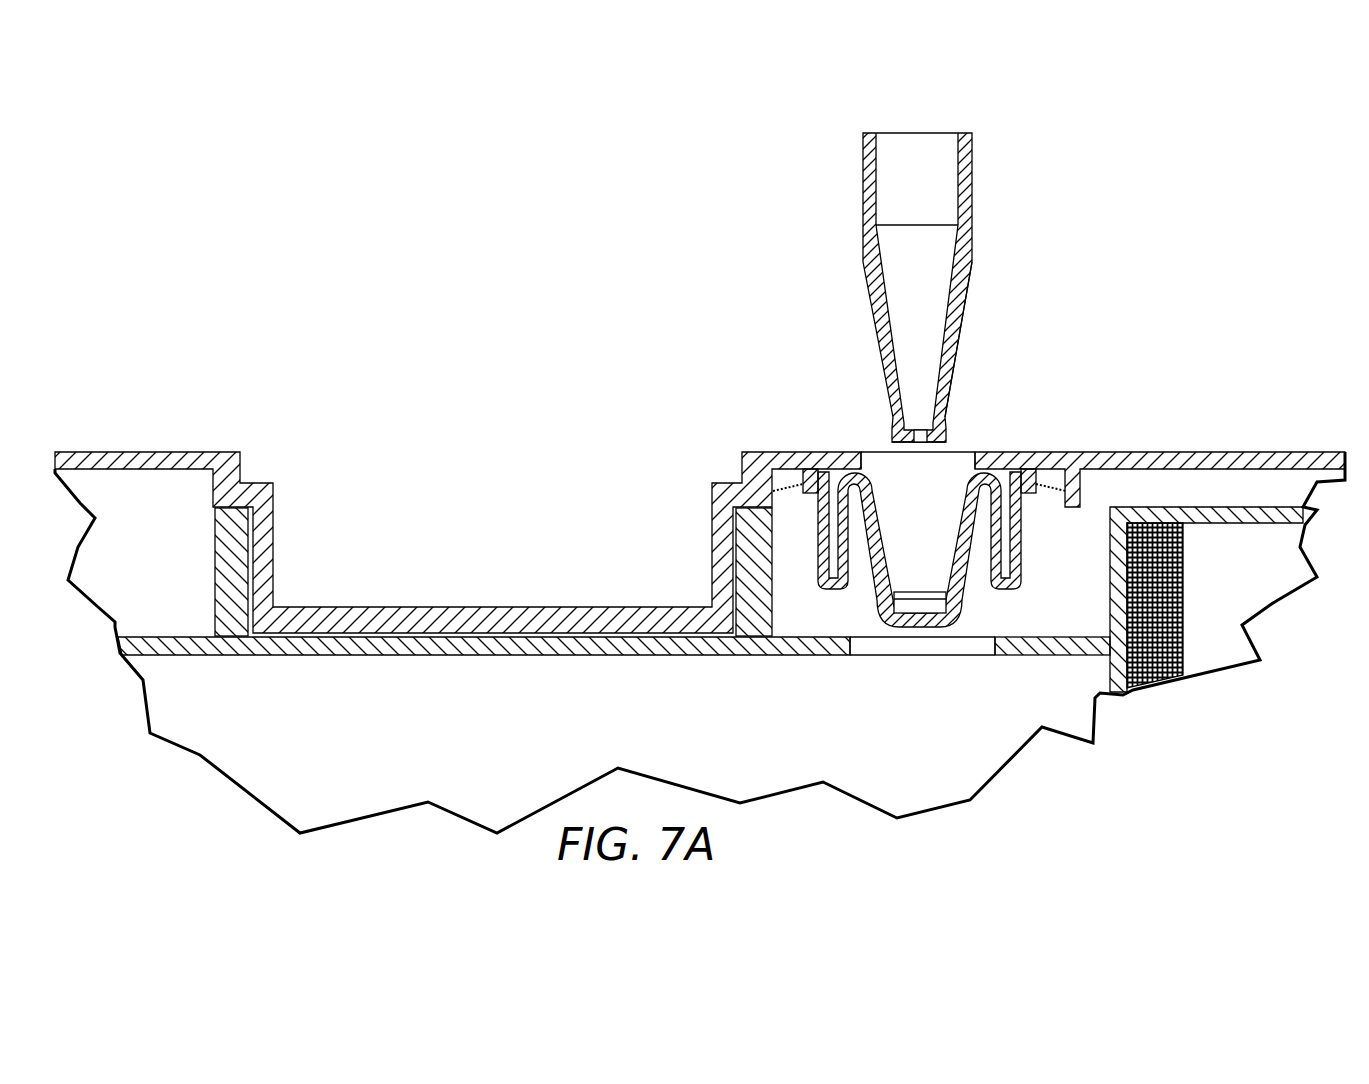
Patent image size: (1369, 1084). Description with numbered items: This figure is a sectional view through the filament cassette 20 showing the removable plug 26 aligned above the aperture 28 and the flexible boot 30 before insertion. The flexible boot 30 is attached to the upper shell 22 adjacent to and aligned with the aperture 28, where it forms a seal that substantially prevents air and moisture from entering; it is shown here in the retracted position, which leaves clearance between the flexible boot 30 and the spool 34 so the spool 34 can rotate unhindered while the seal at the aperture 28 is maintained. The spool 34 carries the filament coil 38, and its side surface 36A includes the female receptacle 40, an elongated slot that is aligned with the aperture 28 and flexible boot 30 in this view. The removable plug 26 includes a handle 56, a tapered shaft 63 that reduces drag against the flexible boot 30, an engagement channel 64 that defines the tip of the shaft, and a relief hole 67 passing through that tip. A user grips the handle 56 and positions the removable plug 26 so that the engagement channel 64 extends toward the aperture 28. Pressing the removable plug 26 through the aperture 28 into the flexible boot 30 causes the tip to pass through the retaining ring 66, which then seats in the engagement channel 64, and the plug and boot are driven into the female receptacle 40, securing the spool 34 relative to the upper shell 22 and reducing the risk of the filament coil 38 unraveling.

The filament cassette 20 is at (1132, 322).
The upper shell 22 is at (1187, 452).
The removable plug 26 is at (985, 190).
The aperture 28 is at (885, 458).
The flexible boot 30 is at (1023, 545).
The spool 34 is at (1142, 507).
The side surface 36A is at (1090, 632).
The filament coil 38 is at (1183, 617).
The female receptacle 40 is at (875, 656).
The handle 56 is at (888, 163).
The tapered shaft 63 is at (962, 310).
The engagement channel 64 is at (960, 423).
The retaining ring 66 is at (937, 595).
The relief hole 67 is at (922, 443).